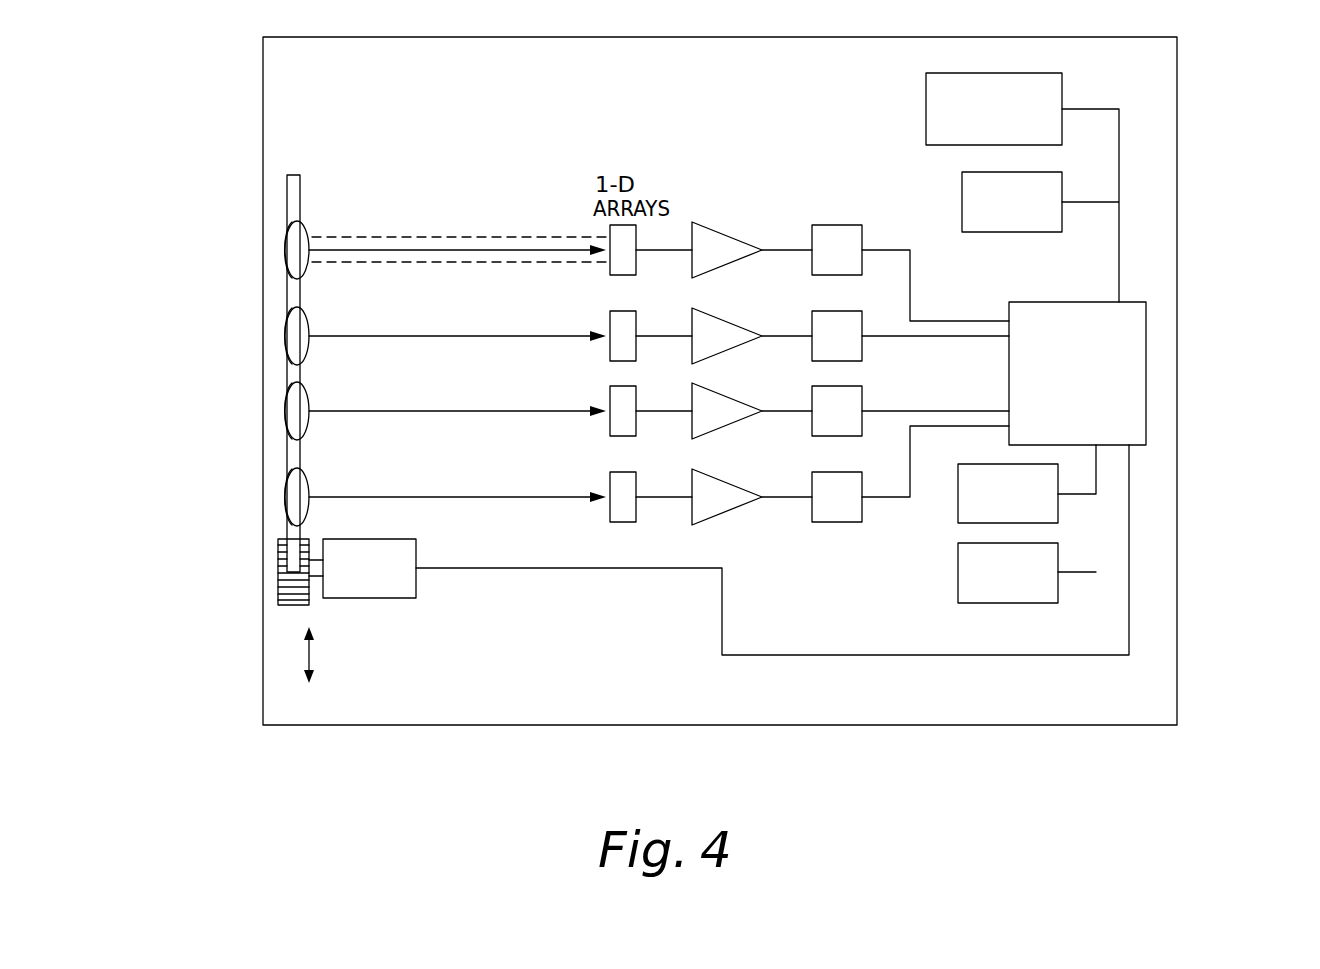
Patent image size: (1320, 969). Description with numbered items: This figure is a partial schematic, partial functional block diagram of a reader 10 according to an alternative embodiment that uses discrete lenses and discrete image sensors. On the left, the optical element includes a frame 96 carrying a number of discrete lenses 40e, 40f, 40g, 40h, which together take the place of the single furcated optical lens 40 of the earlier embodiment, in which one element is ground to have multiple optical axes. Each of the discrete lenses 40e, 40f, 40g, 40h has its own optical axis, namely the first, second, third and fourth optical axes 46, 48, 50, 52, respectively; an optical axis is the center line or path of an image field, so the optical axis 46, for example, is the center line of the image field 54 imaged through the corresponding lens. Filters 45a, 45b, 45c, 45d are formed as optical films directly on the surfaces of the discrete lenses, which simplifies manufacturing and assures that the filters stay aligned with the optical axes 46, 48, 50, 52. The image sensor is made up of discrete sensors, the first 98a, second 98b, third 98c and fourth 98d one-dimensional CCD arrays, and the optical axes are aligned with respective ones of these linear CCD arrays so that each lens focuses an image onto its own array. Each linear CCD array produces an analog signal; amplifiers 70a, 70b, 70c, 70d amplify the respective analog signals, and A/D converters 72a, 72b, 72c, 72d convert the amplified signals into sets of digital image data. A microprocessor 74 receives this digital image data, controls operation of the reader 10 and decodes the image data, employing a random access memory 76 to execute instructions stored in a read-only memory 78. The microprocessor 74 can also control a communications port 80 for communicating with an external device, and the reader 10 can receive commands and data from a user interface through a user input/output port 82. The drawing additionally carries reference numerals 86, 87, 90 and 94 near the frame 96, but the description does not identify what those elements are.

The reader 10 is at (1220, 577).
The furcated optical lens 40 is at (298, 150).
The discrete lens 40e is at (309, 256).
The discrete lens 40f is at (309, 341).
The discrete lens 40g is at (309, 416).
The discrete lens 40h is at (309, 491).
The filter 45a is at (284, 250).
The filter 45b is at (284, 336).
The filter 45c is at (284, 411).
The filter 45d is at (284, 497).
The first optical axis 46 is at (374, 250).
The second optical axis 48 is at (399, 336).
The third optical axis 50 is at (428, 411).
The fourth optical axis 52 is at (455, 497).
The image field 54 is at (326, 262).
The amplifier 70a is at (693, 272).
The amplifier 70b is at (693, 359).
The amplifier 70c is at (693, 434).
The amplifier 70d is at (693, 520).
The A/D converter 72a is at (812, 238).
The A/D converter 72b is at (812, 324).
The A/D converter 72c is at (812, 399).
The A/D converter 72d is at (812, 485).
The microprocessor 74 is at (1146, 374).
The random access memory 76 is at (926, 114).
The read-only memory 78 is at (962, 205).
The communications port 80 is at (958, 572).
The user input/output port 82 is at (958, 494).
The drive mechanism 86 is at (428, 621).
The direction of motion 87 is at (305, 655).
The motor 90 is at (383, 598).
The gear drive 94 is at (278, 587).
The frame 96 is at (287, 197).
The first one-dimensional CCD array 98a is at (610, 270).
The second one-dimensional CCD array 98b is at (610, 356).
The third one-dimensional CCD array 98c is at (610, 431).
The fourth one-dimensional CCD array 98d is at (610, 517).